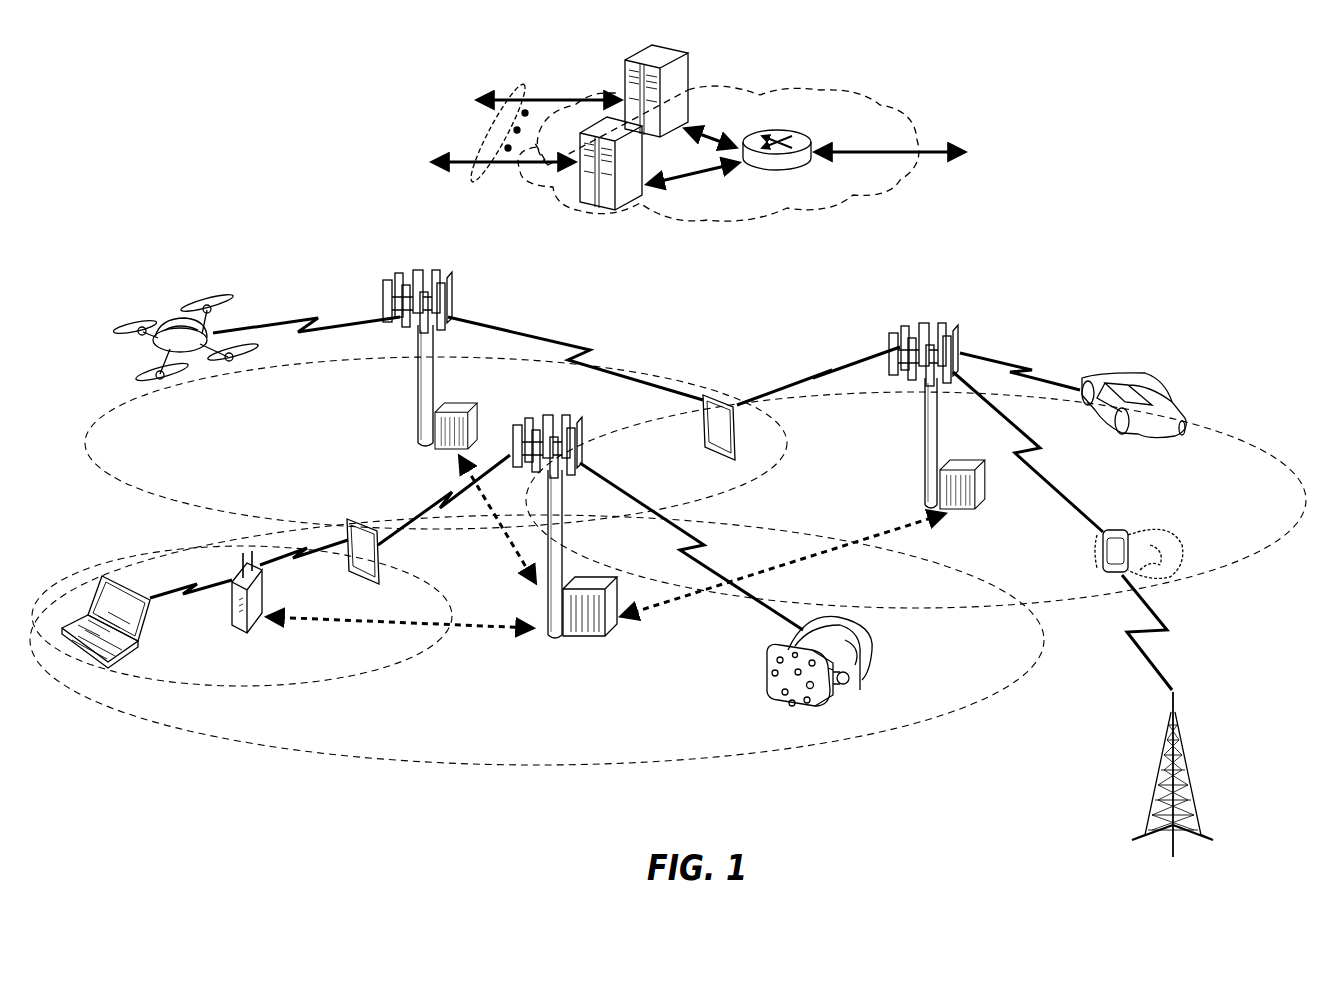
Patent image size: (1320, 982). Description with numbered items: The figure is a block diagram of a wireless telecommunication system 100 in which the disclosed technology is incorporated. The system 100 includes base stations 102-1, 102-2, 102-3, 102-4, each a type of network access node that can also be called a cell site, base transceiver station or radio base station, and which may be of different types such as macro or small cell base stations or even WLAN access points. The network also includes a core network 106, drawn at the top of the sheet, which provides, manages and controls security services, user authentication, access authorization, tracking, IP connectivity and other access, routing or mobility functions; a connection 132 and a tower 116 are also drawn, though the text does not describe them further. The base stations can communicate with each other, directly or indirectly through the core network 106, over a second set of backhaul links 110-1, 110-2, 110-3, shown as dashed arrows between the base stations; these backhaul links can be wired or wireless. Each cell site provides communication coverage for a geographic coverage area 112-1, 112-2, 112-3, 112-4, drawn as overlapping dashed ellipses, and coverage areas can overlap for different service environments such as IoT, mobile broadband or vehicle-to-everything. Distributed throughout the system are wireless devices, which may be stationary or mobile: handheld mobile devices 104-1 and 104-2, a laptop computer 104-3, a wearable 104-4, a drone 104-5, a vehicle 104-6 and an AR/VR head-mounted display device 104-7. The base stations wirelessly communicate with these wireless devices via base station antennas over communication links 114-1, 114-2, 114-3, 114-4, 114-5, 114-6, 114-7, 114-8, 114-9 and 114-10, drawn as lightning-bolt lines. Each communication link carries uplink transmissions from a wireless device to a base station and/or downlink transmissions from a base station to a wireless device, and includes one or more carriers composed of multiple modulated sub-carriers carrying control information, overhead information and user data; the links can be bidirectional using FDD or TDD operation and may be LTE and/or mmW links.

The wireless telecommunication system 100 is at (1207, 141).
The core network 106 is at (698, 156).
The network interface to external networks 132 is at (490, 178).
The base station 102-1 is at (553, 637).
The base station 102-2 is at (417, 397).
The base station 102-3 is at (922, 428).
The base station 102-4 is at (230, 627).
The wireless device 104-1 is at (420, 562).
The wireless device 104-2 is at (702, 428).
The wireless device 104-3 is at (85, 662).
The wireless device 104-4 is at (1122, 530).
The wireless device 104-5 is at (193, 365).
The wireless device 104-6 is at (1157, 378).
The wireless device 104-7 is at (877, 647).
The backhaul link 110-1 is at (297, 625).
The backhaul link 110-2 is at (847, 547).
The backhaul link 110-3 is at (515, 545).
The geographic coverage area 112-1 is at (480, 762).
The geographic coverage area 112-2 is at (363, 673).
The geographic coverage area 112-3 is at (147, 500).
The geographic coverage area 112-4 is at (1210, 428).
The communication link 114-1 is at (705, 547).
The communication link 114-2 is at (440, 495).
The communication link 114-3 is at (162, 597).
The communication link 114-4 is at (302, 565).
The communication link 114-5 is at (313, 317).
The communication link 114-6 is at (583, 346).
The communication link 114-7 is at (818, 375).
The communication link 114-8 is at (1045, 467).
The communication link 114-9 is at (1015, 360).
The communication link 114-10 is at (1193, 635).
The broadcast tower 116 is at (1188, 755).